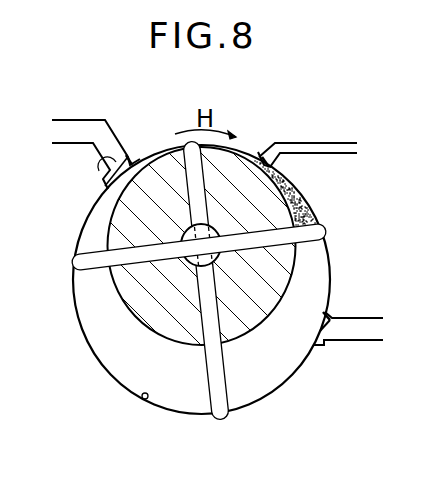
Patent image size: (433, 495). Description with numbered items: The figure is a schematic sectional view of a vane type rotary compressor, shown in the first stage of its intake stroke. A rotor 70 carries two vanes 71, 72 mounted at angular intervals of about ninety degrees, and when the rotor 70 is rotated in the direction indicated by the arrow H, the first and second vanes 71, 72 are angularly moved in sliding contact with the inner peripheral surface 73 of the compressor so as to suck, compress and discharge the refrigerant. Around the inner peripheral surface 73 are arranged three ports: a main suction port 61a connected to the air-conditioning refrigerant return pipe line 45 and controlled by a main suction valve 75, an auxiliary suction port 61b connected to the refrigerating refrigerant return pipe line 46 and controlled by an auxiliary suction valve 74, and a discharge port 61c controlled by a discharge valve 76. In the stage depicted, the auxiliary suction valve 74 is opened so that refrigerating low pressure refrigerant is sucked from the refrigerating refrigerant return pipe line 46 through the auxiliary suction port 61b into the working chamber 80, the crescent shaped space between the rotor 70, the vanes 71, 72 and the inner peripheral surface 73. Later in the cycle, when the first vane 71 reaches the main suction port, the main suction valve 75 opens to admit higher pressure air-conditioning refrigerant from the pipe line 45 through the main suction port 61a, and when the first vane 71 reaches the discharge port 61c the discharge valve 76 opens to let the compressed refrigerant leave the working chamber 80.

The air-conditioning refrigerant return pipe line 45 is at (376, 318).
The refrigerating refrigerant return pipe line 46 is at (323, 143).
The main suction port 61a is at (332, 312).
The auxiliary suction port 61b is at (277, 166).
The discharge port 61c is at (134, 157).
The rotor 70 is at (147, 319).
The first vane 71 is at (100, 246).
The second vane 72 is at (220, 413).
The inner peripheral surface 73 is at (145, 399).
The auxiliary suction valve 74 is at (258, 152).
The main suction valve 75 is at (332, 328).
The discharge valve 76 is at (102, 160).
The working chamber 80 is at (308, 204).